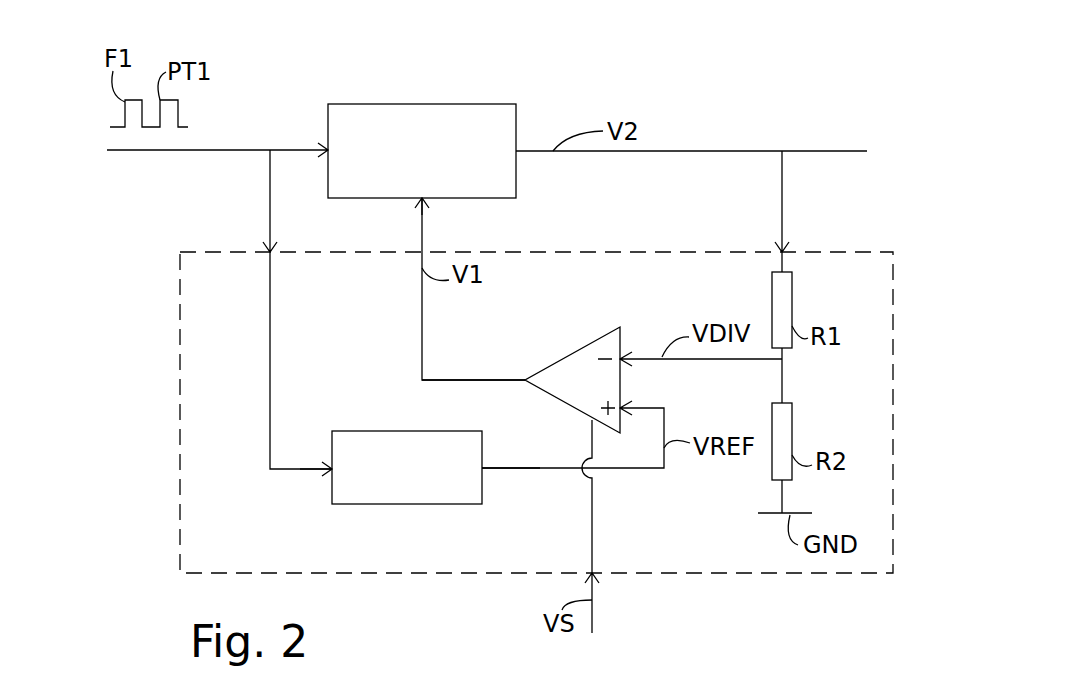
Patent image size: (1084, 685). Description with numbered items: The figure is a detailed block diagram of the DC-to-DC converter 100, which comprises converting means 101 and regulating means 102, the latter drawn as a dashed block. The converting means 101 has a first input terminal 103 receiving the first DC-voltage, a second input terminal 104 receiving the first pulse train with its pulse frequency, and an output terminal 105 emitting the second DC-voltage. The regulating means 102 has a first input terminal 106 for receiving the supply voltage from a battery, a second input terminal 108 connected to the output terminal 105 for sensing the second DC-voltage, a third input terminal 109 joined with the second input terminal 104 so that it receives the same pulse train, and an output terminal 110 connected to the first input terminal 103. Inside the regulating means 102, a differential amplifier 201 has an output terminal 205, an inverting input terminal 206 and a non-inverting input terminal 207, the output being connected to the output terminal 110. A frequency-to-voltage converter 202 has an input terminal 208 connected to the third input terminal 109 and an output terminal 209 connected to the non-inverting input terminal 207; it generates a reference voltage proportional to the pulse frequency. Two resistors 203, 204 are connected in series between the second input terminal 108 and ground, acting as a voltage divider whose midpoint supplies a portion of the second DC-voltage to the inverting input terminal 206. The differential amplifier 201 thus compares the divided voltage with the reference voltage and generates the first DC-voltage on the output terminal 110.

The DC-to-DC converter 100 is at (615, 78).
The converting means 101 is at (516, 106).
The regulating means 102 is at (928, 220).
The first input terminal of the converting means 103 is at (425, 208).
The second input terminal of the converting means 104 is at (326, 149).
The output terminal of the converting means 105 is at (516, 151).
The first input terminal of the regulating means 106 is at (594, 585).
The second input terminal of the regulating means 108 is at (780, 248).
The third input terminal of the regulating means 109 is at (268, 247).
The output terminal of the regulating means 110 is at (421, 243).
The differential amplifier 201 is at (562, 353).
The frequency-to-voltage converter 202 is at (386, 431).
The resistor 203 is at (792, 290).
The resistor 204 is at (792, 418).
The output terminal of the differential amplifier 205 is at (522, 380).
The inverting input terminal of the differential amplifier 206 is at (636, 358).
The non-inverting input terminal of the differential amplifier 207 is at (630, 407).
The input terminal of the frequency-to-voltage converter 208 is at (320, 470).
The output terminal of the frequency-to-voltage converter 209 is at (482, 470).